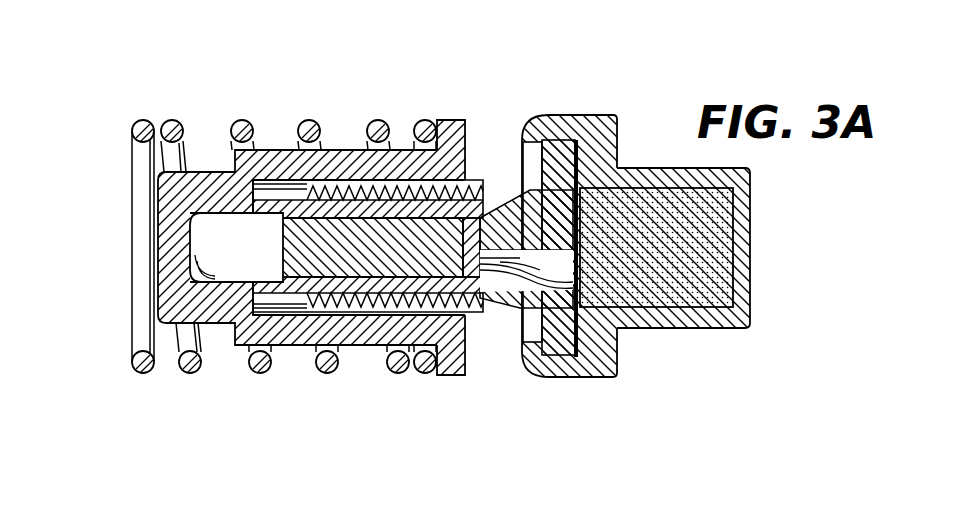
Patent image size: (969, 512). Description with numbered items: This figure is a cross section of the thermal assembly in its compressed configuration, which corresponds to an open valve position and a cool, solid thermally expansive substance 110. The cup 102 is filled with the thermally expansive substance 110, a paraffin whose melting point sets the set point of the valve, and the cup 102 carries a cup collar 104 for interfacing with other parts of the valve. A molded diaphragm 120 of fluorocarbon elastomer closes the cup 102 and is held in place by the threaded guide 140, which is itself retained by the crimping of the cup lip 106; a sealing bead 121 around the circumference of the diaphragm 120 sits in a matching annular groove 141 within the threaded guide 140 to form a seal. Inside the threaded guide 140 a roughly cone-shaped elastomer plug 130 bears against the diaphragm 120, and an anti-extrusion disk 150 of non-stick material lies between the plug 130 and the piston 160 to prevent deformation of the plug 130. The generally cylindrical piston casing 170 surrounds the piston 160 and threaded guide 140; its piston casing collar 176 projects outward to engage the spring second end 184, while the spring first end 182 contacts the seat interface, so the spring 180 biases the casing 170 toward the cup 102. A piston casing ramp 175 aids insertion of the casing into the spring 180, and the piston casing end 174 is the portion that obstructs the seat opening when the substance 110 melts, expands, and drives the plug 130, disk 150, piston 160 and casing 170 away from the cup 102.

The cup 102 is at (683, 320).
The cup collar 104 is at (613, 347).
The cup lip 106 is at (525, 145).
The thermally expansive substance 110 is at (707, 263).
The molded diaphragm 120 is at (610, 200).
The sealing bead 121 is at (552, 182).
The plug 130 is at (520, 232).
The threaded guide 140 is at (495, 300).
The annular groove 141 is at (548, 346).
The anti-extrusion disk 150 is at (470, 296).
The piston 160 is at (328, 243).
The piston casing 170 is at (280, 128).
The piston casing end 174 is at (153, 237).
The piston casing ramp 175 is at (213, 347).
The piston casing collar 176 is at (452, 120).
The spring 180 is at (177, 120).
The spring first end 182 is at (145, 373).
The spring second end 184 is at (418, 374).